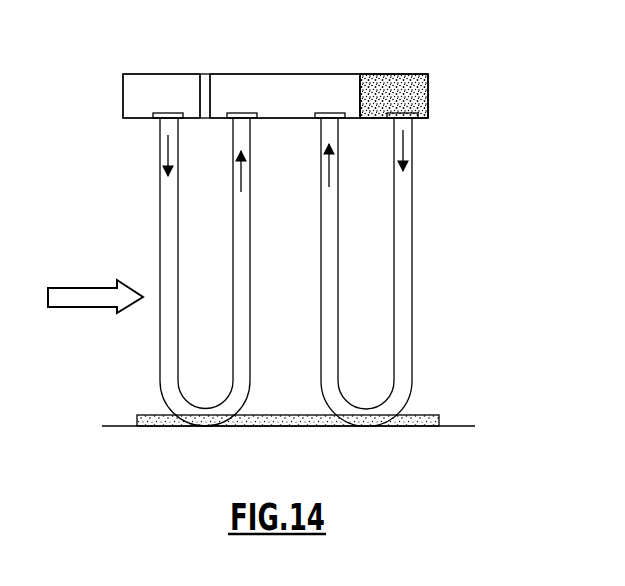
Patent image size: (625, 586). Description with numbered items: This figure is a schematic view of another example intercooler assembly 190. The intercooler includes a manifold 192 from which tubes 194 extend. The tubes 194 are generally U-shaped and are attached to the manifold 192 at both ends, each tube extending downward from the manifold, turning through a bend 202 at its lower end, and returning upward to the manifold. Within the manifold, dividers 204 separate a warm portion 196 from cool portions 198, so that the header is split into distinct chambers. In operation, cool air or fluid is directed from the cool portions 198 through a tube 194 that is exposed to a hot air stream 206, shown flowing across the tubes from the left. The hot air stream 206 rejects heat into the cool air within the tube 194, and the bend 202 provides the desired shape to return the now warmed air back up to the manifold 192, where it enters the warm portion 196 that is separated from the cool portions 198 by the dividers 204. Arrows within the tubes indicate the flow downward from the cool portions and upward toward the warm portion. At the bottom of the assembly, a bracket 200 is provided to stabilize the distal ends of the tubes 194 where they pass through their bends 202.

The intercooler assembly 190 is at (466, 159).
The manifold 192 is at (278, 66).
The tubes 194 is at (243, 300).
The warm portion 196 is at (240, 84).
The cool portions 198 is at (147, 82).
The bracket 200 is at (425, 418).
The tube bend 202 is at (223, 408).
The dividers 204 is at (203, 80).
The hot air stream 206 is at (86, 365).